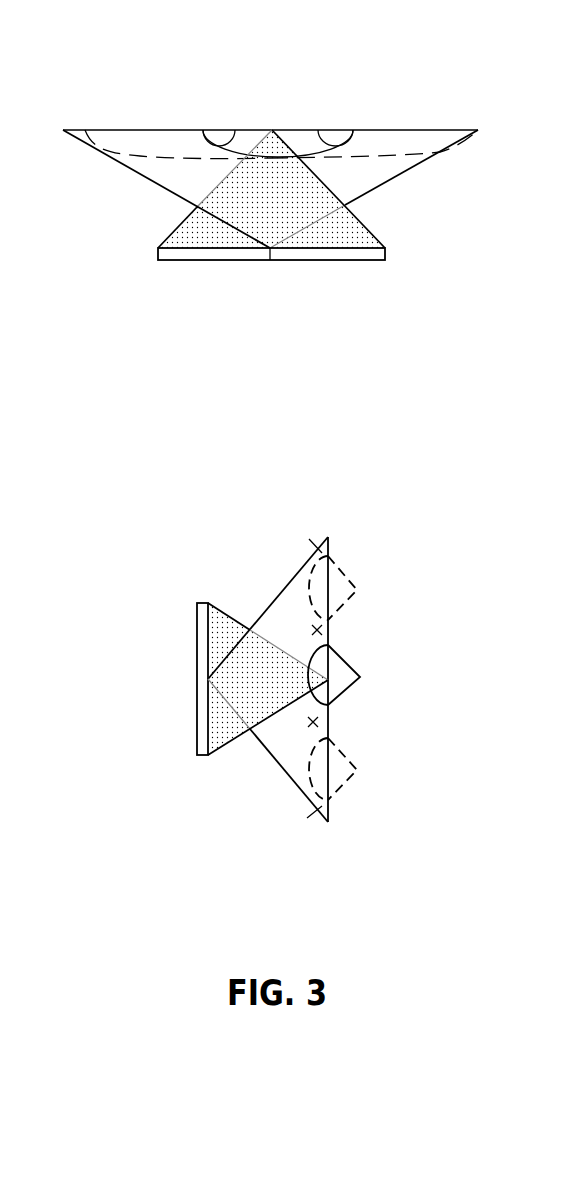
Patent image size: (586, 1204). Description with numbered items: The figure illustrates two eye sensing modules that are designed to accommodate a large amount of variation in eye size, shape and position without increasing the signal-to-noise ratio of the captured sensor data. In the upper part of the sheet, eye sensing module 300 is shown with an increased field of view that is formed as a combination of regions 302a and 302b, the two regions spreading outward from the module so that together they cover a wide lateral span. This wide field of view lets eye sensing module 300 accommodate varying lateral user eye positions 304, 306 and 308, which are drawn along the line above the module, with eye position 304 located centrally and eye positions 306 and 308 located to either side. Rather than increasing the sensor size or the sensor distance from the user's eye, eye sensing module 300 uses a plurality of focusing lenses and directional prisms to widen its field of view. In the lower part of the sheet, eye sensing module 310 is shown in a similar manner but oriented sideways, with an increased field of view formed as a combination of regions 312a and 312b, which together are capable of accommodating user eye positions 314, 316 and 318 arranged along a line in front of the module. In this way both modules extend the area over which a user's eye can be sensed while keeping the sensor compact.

The eye sensing module 300 is at (272, 260).
The field of view region 302a is at (355, 198).
The field of view region 302b is at (187, 187).
The user eye position 304 is at (278, 135).
The user eye position 306 is at (160, 145).
The user eye position 308 is at (392, 141).
The eye sensing module 310 is at (197, 680).
The field of view region 312a is at (258, 738).
The field of view region 312b is at (266, 612).
The user eye position 314 is at (346, 674).
The user eye position 316 is at (348, 591).
The user eye position 318 is at (343, 773).